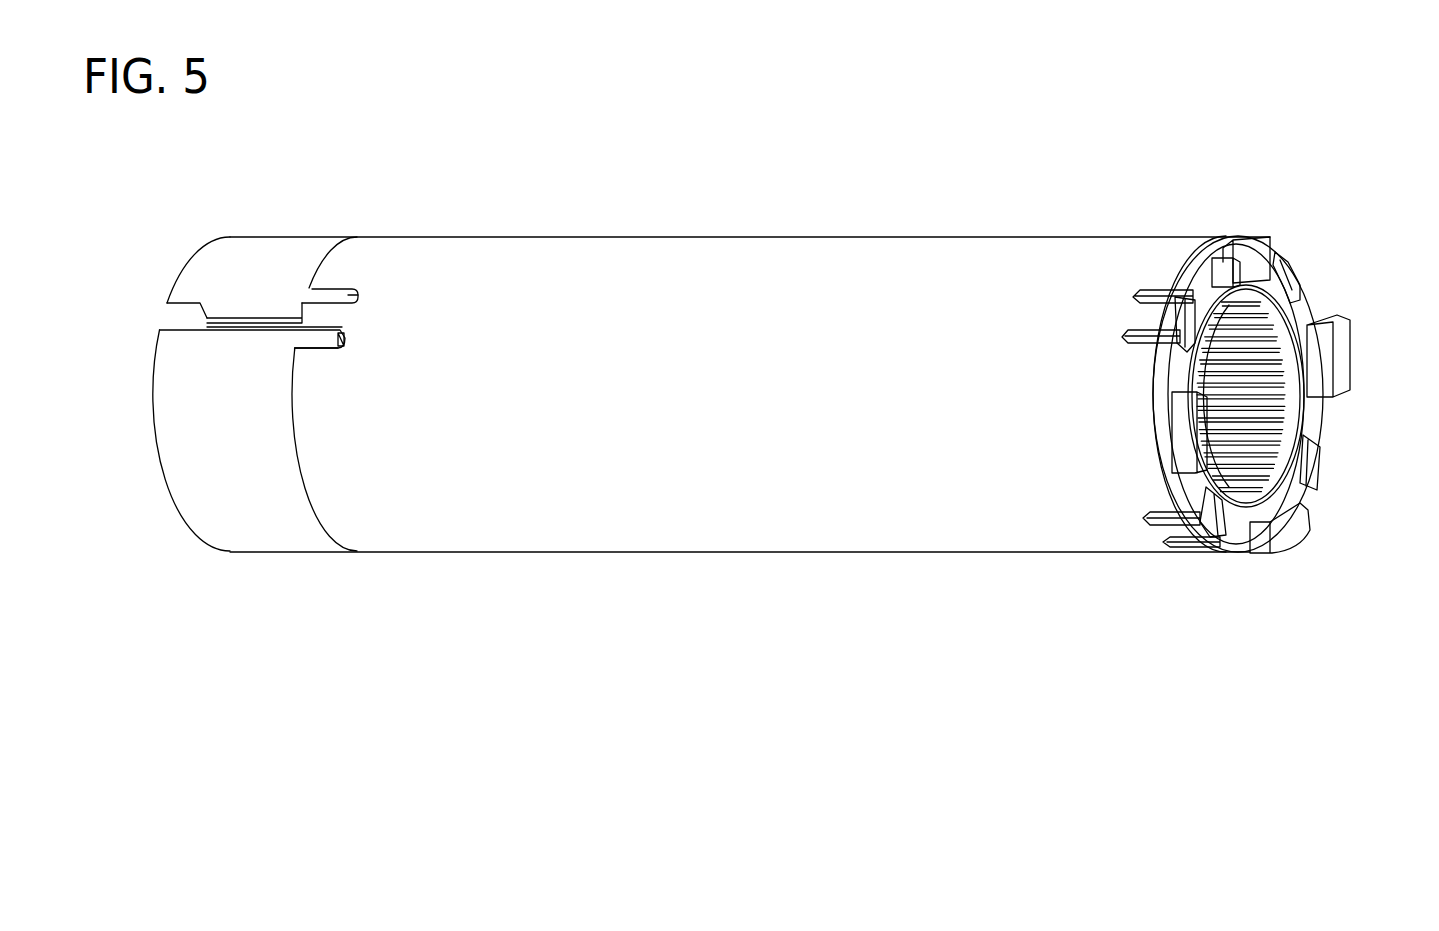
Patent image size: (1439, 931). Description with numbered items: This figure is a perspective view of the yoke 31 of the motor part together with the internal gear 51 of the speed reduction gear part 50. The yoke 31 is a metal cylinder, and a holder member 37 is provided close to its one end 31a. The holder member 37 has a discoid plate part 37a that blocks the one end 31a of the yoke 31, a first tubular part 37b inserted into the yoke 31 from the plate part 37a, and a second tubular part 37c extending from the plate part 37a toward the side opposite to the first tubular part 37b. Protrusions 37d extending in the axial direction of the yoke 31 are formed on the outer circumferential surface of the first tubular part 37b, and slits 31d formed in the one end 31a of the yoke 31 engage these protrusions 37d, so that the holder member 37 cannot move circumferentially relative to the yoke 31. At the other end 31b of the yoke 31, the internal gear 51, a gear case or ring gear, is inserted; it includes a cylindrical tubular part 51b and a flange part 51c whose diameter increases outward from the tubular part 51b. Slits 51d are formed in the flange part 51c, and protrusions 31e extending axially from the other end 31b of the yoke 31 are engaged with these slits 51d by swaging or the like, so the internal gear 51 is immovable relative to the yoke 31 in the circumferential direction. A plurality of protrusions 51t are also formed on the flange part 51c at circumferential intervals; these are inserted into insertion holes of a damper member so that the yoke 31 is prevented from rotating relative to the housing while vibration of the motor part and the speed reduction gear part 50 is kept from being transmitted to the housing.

The yoke 31 is at (781, 247).
The one end of the yoke 31a is at (377, 540).
The other end of the yoke 31b is at (1197, 245).
The slits 31d is at (305, 313).
The protrusions 31e is at (1157, 298).
The holder member 37 is at (293, 240).
The plate part 37a is at (337, 265).
The first tubular part 37b is at (334, 350).
The second tubular part 37c is at (238, 248).
The protrusions 37d is at (338, 338).
The speed reduction gear part 50 is at (1309, 276).
The internal gear 51 is at (1313, 293).
The tubular part 51b is at (1257, 392).
The flange part 51c is at (1218, 242).
The slits 51d is at (1187, 332).
The protrusions 51t is at (1263, 253).